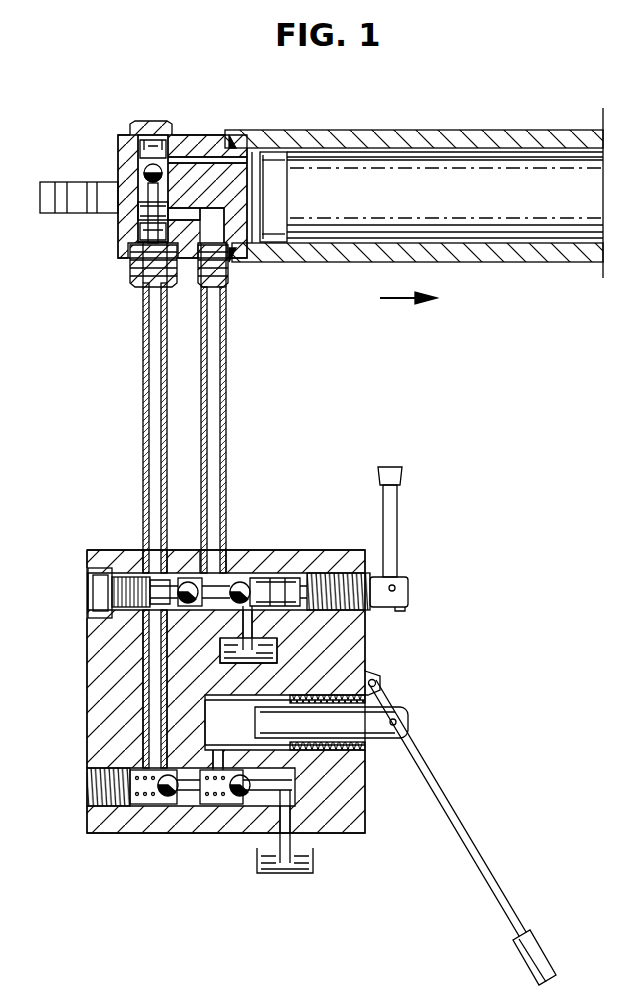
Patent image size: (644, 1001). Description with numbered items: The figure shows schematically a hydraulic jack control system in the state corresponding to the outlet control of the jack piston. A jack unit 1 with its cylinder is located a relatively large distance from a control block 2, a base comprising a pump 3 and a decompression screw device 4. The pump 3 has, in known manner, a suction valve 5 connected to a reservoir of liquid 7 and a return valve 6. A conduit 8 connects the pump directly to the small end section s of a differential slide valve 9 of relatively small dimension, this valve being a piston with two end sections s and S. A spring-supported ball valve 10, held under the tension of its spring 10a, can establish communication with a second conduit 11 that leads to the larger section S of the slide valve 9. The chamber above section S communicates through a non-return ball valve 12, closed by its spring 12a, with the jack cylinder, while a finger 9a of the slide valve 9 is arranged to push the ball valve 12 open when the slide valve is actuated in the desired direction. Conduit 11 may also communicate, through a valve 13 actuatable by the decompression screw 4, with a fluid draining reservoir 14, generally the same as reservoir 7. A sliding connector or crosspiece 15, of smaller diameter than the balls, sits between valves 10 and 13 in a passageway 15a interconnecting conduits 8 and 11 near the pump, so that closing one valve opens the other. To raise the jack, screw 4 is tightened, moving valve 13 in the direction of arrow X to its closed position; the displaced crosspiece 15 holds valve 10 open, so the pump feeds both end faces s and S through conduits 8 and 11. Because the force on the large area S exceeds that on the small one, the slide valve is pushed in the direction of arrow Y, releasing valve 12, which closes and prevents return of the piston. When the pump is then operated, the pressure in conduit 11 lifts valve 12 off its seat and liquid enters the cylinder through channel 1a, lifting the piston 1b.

The jack unit 1 is at (377, 130).
The channel 1a is at (178, 140).
The piston 1b is at (435, 175).
The control block 2 is at (92, 648).
The pump 3 is at (410, 723).
The decompression screw device 4 is at (334, 575).
The suction valve 5 is at (238, 800).
The return valve 6 is at (168, 798).
The reservoir of liquid 7 is at (302, 873).
The conduit 8 is at (147, 427).
The slide valve 9 is at (142, 226).
The finger 9a is at (148, 197).
The ball valve 10 is at (193, 578).
The spring 10a is at (177, 575).
The conduit 11 is at (217, 418).
The non-return ball valve 12 is at (146, 168).
The spring 12a is at (170, 123).
The valve 13 is at (250, 578).
The fluid draining reservoir 14 is at (280, 652).
The sliding connector 15 is at (215, 603).
The passageway 15a is at (235, 578).
The large end section S is at (200, 160).
The small end section s is at (130, 275).
The arrow X is at (380, 632).
The arrow Y is at (110, 238).